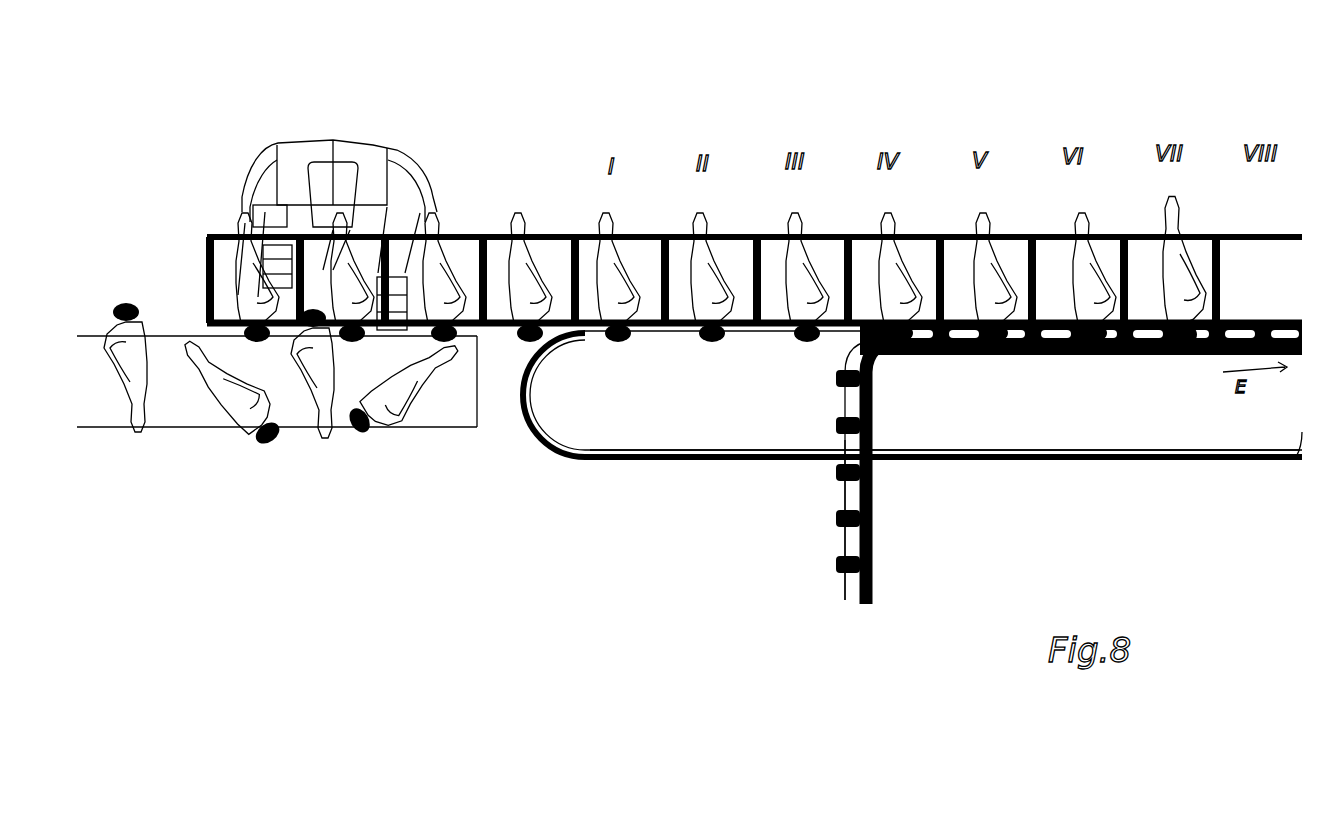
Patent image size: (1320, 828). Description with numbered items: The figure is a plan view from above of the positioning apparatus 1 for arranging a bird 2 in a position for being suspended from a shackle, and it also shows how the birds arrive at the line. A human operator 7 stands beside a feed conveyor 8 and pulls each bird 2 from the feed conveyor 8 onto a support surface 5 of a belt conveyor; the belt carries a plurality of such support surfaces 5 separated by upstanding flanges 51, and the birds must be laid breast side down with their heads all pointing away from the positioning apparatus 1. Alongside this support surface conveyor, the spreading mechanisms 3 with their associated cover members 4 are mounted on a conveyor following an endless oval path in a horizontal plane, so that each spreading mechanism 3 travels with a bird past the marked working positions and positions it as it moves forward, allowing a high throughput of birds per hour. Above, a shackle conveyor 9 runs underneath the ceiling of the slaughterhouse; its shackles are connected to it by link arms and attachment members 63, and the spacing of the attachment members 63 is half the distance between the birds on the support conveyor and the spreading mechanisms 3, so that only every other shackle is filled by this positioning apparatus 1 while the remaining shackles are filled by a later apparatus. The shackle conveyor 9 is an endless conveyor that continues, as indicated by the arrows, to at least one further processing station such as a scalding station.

The apparatus 1 is at (533, 427).
The bird 2 is at (527, 227).
The spreading mechanism 3 is at (672, 463).
The cover member 4 is at (672, 463).
The support surface 5 is at (467, 228).
The upstanding flange 51 is at (497, 228).
The human operator 7 is at (378, 156).
The feed conveyor 8 is at (283, 412).
The shackle conveyor 9 is at (852, 538).
The attachment member 63 is at (838, 468).